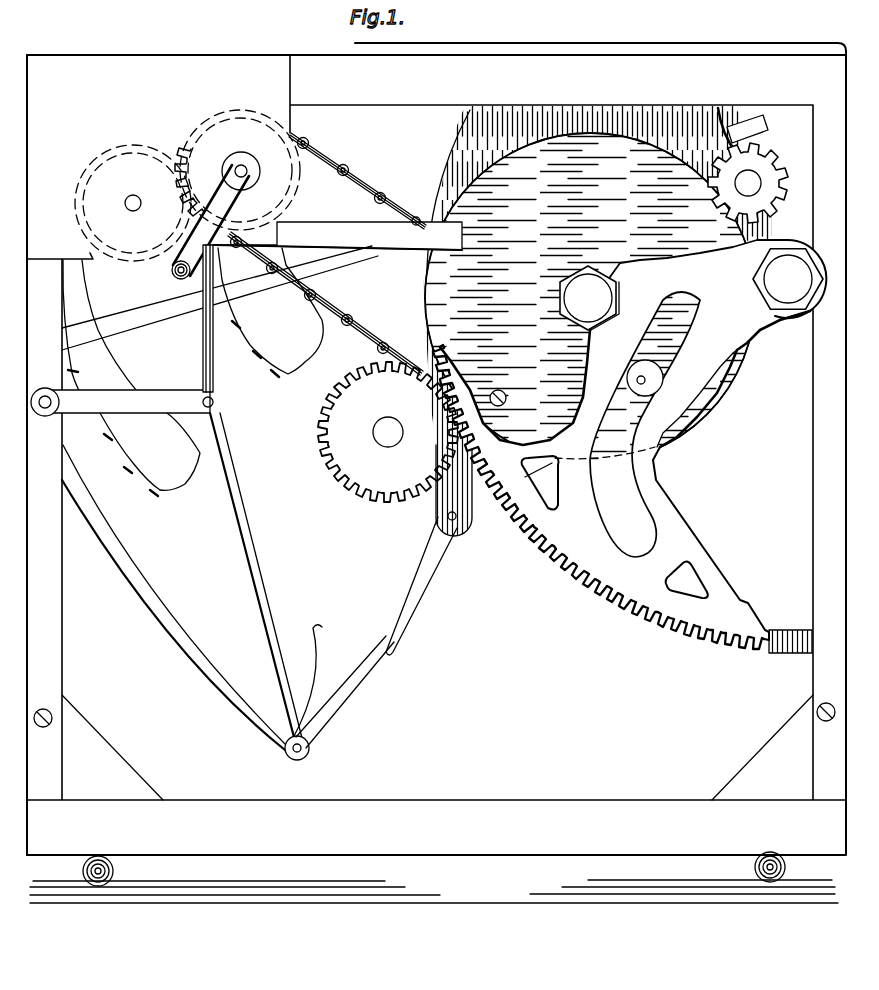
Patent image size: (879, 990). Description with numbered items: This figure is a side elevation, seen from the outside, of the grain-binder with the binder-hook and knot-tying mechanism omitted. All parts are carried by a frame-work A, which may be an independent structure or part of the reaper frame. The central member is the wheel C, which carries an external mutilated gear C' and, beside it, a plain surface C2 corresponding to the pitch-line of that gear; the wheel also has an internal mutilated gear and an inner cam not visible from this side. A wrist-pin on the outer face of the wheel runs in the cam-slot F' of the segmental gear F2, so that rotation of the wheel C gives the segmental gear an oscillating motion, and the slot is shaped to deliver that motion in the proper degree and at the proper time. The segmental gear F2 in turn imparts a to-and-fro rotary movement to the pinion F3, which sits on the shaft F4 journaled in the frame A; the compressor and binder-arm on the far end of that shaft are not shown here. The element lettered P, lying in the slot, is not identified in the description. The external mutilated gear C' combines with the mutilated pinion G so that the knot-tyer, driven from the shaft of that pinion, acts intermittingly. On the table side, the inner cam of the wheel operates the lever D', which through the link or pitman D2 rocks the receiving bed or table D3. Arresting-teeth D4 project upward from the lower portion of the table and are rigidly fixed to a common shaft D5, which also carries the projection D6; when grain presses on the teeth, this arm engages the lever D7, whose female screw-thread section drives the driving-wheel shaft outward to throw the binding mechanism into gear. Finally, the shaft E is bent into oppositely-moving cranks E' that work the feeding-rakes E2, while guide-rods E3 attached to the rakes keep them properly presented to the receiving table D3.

The frame-work A is at (436, 473).
The wheel C is at (590, 285).
The external mutilated gear C' is at (367, 319).
The plain surface C2 is at (697, 398).
The lever D' is at (337, 236).
The link or pitman connection D2 is at (253, 495).
The receiving bed or table D3 is at (175, 597).
The arresting-teeth D4 is at (316, 682).
The shaft D5 is at (292, 757).
The projection D6 is at (354, 696).
The lever D7 is at (421, 586).
The shaft E is at (133, 203).
The cranks E' is at (299, 194).
The feeding-rakes E2 is at (177, 372).
The guide-rods E3 is at (220, 298).
The cam-slot F' is at (657, 424).
The segmental gear F2 is at (630, 444).
The pinion F3 is at (594, 497).
The shaft F4 is at (388, 432).
The mutilated pinion G is at (749, 169).
The roller pin P is at (645, 378).